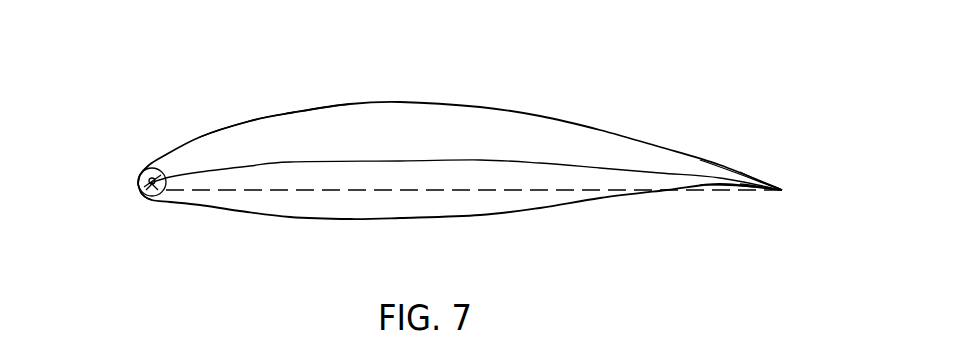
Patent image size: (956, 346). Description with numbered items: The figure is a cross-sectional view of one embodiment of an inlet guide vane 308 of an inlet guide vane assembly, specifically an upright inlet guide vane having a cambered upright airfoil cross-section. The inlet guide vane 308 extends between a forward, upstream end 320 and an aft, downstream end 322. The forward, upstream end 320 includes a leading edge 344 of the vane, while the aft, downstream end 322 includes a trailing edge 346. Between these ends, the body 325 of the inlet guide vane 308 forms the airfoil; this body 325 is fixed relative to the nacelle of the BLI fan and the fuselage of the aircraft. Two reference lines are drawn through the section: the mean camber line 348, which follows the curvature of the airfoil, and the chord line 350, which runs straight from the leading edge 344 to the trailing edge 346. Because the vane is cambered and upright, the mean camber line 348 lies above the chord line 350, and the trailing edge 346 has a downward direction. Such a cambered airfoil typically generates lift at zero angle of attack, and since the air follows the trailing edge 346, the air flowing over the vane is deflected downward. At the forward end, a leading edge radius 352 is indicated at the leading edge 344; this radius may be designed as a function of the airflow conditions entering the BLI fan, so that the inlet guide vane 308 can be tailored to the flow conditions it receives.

The inlet guide vane 308 is at (537, 66).
The forward, upstream end 320 is at (108, 163).
The aft, downstream end 322 is at (820, 180).
The body 325 is at (310, 107).
The leading edge 344 is at (138, 184).
The trailing edge 346 is at (783, 197).
The mean camber line 348 is at (415, 160).
The chord line 350 is at (365, 190).
The leading edge radius 352 is at (155, 197).